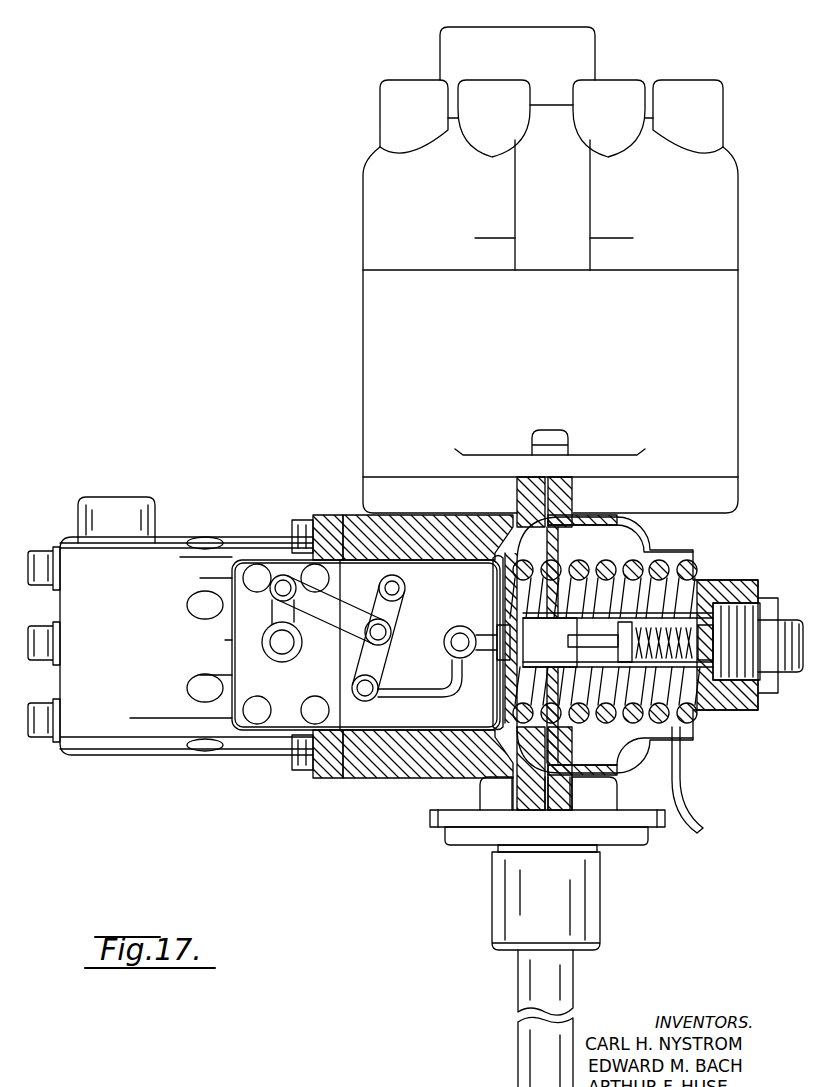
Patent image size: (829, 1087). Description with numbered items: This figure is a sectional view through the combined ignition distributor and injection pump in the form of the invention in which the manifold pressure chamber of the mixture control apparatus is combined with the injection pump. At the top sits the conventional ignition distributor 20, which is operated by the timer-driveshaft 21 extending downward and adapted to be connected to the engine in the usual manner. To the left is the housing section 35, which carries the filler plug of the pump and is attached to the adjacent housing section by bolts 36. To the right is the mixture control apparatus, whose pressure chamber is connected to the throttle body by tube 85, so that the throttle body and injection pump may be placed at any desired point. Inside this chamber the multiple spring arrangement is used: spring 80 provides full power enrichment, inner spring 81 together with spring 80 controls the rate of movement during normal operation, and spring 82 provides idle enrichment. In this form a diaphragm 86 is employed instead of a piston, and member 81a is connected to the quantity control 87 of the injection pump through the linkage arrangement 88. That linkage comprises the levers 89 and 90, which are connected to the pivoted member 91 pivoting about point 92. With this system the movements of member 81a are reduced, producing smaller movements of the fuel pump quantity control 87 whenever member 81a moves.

The ignition distributor 20 is at (352, 368).
The timer-driveshaft 21 is at (540, 972).
The housing section 35 is at (160, 548).
The bolts 36 is at (46, 628).
The spring 80 is at (612, 545).
The inner spring 81 is at (578, 725).
The member 81a is at (481, 632).
The spring 82 is at (615, 727).
The tube 85 is at (688, 772).
The diaphragm 86 is at (517, 525).
The quantity control 87 is at (295, 618).
The linkage arrangement 88 is at (400, 632).
The lever 89 is at (348, 612).
The lever 90 is at (420, 693).
The pivoted member 91 is at (385, 658).
The pivot point 92 is at (392, 588).